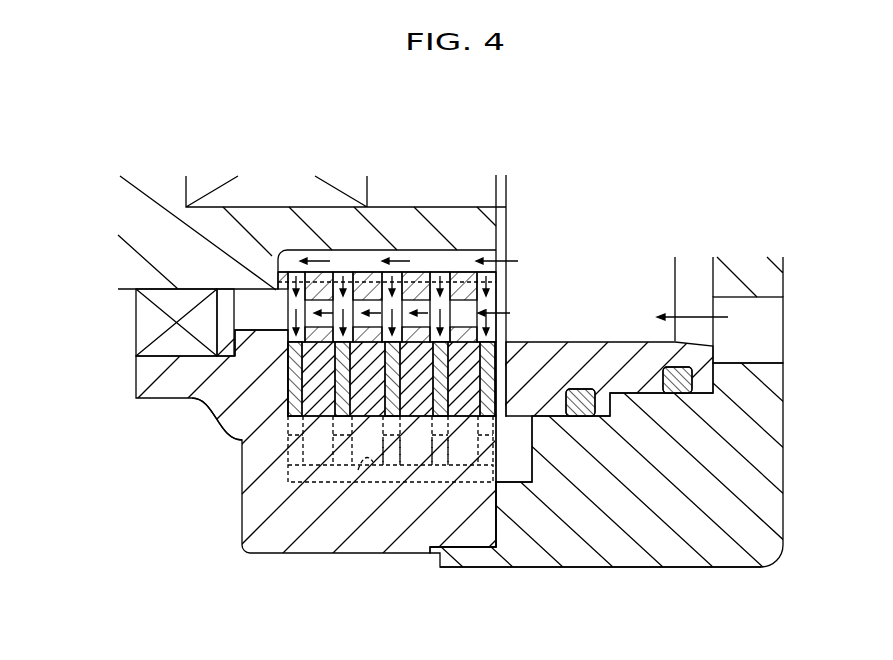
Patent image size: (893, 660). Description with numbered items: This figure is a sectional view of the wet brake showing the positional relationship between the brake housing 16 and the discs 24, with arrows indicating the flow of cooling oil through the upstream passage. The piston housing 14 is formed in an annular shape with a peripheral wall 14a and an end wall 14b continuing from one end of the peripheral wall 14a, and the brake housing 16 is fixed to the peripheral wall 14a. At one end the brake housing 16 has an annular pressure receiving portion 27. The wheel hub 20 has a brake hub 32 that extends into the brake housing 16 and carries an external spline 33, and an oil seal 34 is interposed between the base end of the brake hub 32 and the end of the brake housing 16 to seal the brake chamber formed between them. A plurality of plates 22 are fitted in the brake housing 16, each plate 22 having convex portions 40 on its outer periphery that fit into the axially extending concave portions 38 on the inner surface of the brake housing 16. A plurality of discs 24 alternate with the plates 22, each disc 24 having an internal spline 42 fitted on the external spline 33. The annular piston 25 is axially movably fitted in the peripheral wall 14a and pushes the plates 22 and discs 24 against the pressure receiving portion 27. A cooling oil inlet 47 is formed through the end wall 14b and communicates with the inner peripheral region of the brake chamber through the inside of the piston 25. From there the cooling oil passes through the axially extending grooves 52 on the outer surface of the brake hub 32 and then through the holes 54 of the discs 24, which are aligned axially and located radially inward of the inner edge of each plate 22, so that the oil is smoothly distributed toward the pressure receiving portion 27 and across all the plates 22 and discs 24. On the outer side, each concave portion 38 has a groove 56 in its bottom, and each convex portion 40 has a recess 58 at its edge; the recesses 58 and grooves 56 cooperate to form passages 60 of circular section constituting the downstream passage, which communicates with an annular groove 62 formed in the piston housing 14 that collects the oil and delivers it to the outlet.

The piston housing 14 is at (754, 565).
The peripheral wall 14a is at (623, 553).
The end wall 14b is at (748, 272).
The brake housing 16 is at (246, 547).
The wheel hub 20 is at (144, 226).
The plates 22 is at (493, 352).
The discs 24 is at (319, 400).
The piston 25 is at (645, 382).
The pressure receiving portion 27 is at (262, 358).
The brake hub 32 is at (462, 228).
The external spline 33 is at (290, 290).
The oil seal 34 is at (143, 320).
The concave portions 38 is at (392, 455).
The convex portions 40 is at (288, 463).
The internal spline 42 is at (423, 272).
The cooling oil inlet 47 is at (765, 330).
The grooves 52 is at (359, 250).
The holes 54 is at (303, 307).
The groove 56 is at (358, 470).
The recess 58 is at (433, 440).
The passages 60 is at (300, 474).
The annular groove 62 is at (532, 460).